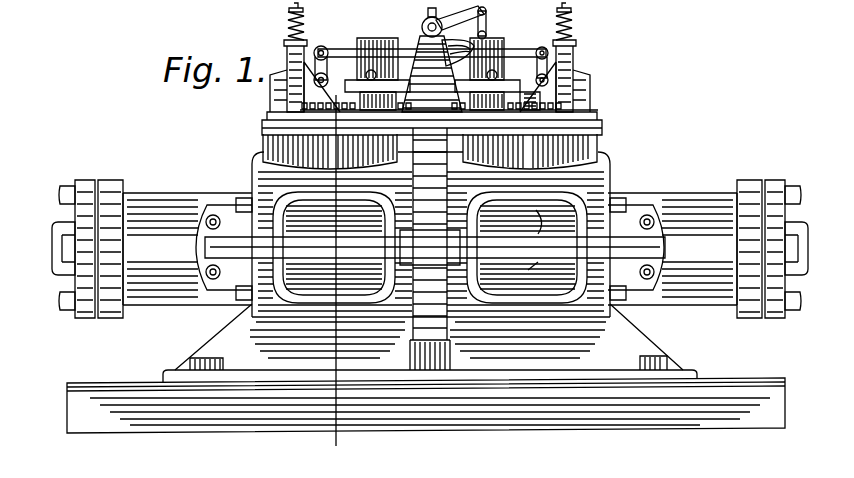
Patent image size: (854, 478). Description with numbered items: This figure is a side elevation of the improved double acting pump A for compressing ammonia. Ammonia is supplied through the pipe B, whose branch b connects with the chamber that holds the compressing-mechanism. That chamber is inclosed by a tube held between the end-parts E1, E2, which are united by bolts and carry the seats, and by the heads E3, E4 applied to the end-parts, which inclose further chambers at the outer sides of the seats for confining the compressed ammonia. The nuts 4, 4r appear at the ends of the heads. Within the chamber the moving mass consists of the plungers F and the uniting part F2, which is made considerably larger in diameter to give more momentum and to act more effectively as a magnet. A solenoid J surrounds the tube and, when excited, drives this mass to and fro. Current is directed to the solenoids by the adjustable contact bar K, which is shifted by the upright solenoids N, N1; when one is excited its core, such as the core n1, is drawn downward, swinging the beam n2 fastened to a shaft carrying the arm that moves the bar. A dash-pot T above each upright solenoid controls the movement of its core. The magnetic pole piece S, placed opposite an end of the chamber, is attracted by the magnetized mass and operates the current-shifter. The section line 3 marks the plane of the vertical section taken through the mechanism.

The double acting pump A is at (425, 230).
The pipe B is at (455, 332).
The end-part E1 is at (178, 205).
The end-part E2 is at (680, 205).
The head E3 is at (75, 200).
The head E4 is at (785, 184).
The stuffing box nut 4 is at (62, 247).
The stuffing box nut (right) 4r is at (798, 247).
The branch b is at (318, 244).
The solenoid J is at (466, 247).
The plunger F is at (545, 219).
The part uniting the plungers F2 is at (530, 276).
The magnetic pole piece S is at (435, 247).
The adjustable contact bar K is at (584, 90).
The dash-pot T is at (510, 43).
The upright solenoid N is at (352, 99).
The upright solenoid N1 is at (548, 87).
The core n1 is at (486, 40).
The beam n2 is at (423, 31).
The section line 3- 3 is at (378, 72).